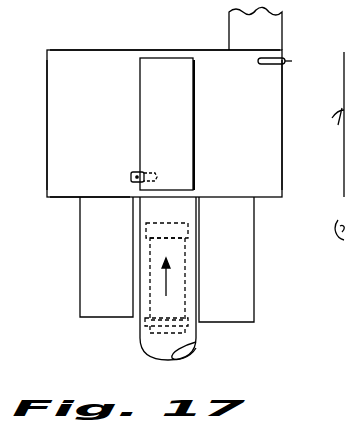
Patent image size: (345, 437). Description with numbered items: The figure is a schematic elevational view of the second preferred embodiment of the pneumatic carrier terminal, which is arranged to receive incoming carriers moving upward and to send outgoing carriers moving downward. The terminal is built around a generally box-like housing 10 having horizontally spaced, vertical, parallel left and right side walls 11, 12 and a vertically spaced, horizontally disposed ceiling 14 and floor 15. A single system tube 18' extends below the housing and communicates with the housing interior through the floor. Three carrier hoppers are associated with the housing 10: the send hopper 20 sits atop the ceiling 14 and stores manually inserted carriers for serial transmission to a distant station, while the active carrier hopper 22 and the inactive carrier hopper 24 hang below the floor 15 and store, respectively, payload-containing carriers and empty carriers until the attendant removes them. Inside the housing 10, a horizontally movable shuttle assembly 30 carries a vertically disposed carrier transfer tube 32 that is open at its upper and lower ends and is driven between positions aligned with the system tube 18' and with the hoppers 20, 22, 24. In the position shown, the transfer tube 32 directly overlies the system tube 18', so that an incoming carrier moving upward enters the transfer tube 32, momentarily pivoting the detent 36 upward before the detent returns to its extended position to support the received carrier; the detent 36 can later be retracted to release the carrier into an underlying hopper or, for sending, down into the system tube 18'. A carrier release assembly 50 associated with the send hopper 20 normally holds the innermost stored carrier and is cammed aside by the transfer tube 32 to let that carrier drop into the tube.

The housing 10 is at (47, 150).
The left side wall 11 is at (47, 104).
The right side wall 12 is at (284, 98).
The ceiling 14 is at (67, 50).
The floor 15 is at (68, 197).
The system tube 18' is at (193, 278).
The send hopper 20 is at (265, 26).
The active carrier hopper 22 is at (255, 289).
The inactive carrier hopper 24 is at (79, 317).
The shuttle assembly 30 is at (159, 117).
The carrier transfer tube 32 is at (194, 129).
The detent 36 is at (131, 178).
The carrier release assembly 50 is at (280, 60).